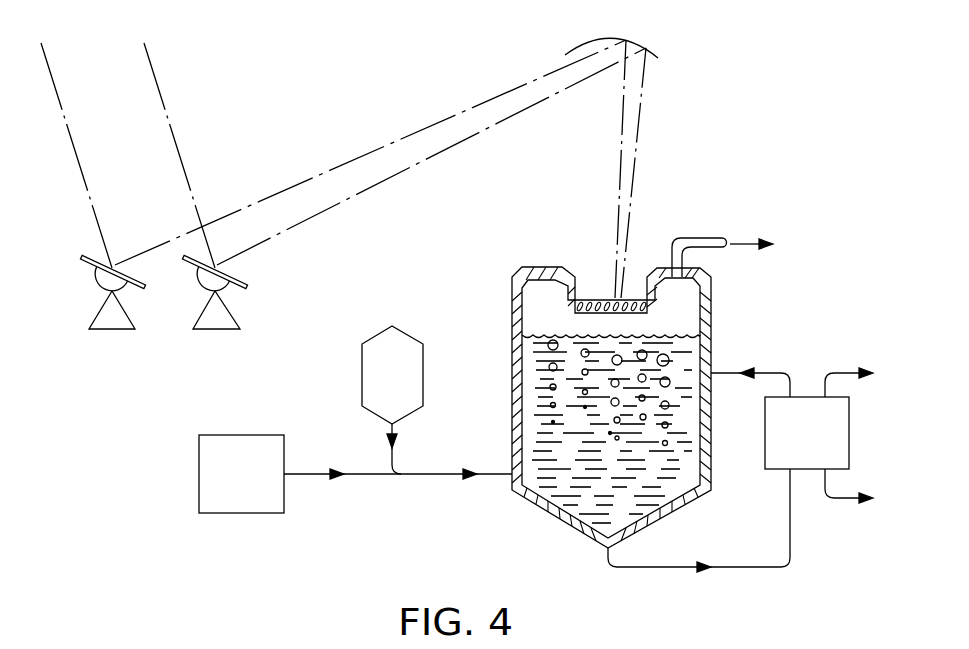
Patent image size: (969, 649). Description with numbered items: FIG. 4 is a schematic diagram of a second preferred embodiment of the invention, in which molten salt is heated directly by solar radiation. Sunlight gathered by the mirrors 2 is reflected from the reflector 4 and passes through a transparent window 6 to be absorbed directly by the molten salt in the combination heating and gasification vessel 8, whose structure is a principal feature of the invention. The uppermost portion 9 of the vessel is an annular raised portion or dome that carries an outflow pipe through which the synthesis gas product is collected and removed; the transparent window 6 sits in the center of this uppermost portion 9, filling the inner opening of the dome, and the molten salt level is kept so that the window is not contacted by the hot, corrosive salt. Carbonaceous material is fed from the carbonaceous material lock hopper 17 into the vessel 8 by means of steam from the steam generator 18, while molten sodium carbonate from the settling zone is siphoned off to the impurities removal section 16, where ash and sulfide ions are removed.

The heliostat mirrors 2 is at (103, 299).
The reflector 4 is at (645, 45).
The transparent window 6 is at (590, 300).
The heating and gasification vessel 8 is at (712, 318).
The uppermost portion 9 is at (686, 266).
The impurities removal section 16 is at (765, 423).
The carbonaceous material lock hopper 17 is at (362, 367).
The steam generator 18 is at (199, 466).